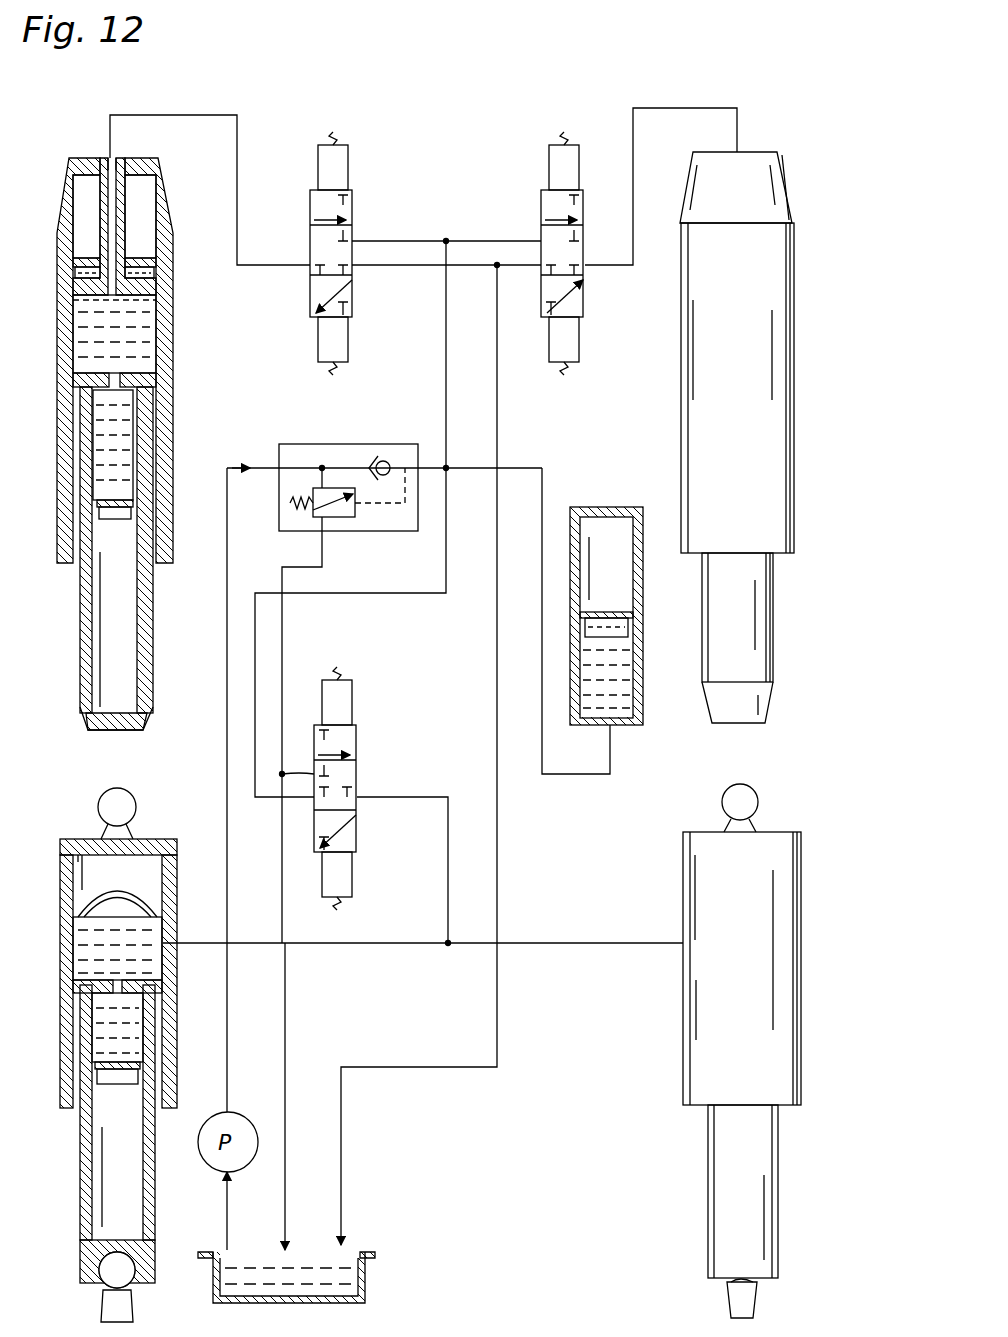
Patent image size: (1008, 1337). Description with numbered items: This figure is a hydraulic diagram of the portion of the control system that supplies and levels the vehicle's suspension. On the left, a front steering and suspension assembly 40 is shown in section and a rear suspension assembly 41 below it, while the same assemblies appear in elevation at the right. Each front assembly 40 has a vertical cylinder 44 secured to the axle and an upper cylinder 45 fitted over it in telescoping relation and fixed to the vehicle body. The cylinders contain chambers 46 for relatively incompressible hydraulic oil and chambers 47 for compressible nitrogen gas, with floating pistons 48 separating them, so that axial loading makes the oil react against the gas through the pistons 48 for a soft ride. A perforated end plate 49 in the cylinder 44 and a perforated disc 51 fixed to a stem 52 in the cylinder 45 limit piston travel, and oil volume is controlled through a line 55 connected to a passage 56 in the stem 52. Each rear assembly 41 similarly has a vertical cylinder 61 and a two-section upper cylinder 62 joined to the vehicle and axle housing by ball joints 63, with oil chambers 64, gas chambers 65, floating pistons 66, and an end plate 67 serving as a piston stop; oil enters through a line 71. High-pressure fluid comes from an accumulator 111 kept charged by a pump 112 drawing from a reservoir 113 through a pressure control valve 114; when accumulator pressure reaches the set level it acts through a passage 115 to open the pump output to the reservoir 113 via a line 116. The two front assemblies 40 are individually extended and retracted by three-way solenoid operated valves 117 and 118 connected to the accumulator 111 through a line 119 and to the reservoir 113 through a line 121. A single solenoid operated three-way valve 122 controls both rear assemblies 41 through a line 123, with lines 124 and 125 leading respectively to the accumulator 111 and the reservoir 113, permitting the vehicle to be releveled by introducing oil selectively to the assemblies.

The front steering and suspension assembly 40 is at (421, 414).
The rear suspension assembly 41 is at (423, 1035).
The vertical cylinder 44 is at (80, 666).
The upper cylinder 45 is at (60, 430).
The chamber for incompressible fluid 46 is at (80, 325).
The chamber for compressible fluid 47 is at (145, 205).
The floating piston 48 is at (140, 255).
The perforated end plate 49 is at (95, 372).
The perforated disc 51 is at (73, 298).
The stem 52 is at (130, 175).
The line 55 is at (212, 115).
The passage 56 is at (112, 215).
The vertical cylinder 61 is at (80, 1162).
The upper cylinder 62 is at (175, 865).
The ball joint 63 is at (130, 800).
The chamber for incompressible fluid 64 is at (80, 955).
The chamber for compressible fluid 65 is at (80, 874).
The floating piston 66 is at (82, 906).
The end plate 67 is at (148, 990).
The line 71 is at (244, 950).
The accumulator 111 is at (610, 507).
The pump 112 is at (285, 1072).
The reservoir 113 is at (372, 1252).
The pressure control valve 114 is at (384, 482).
The passage 115 is at (385, 503).
The line 116 is at (322, 560).
The three-way solenoid operated valve 117 is at (355, 210).
The three-way solenoid operated valve 118 is at (541, 212).
The line 119 is at (446, 375).
The line 121 is at (497, 420).
The solenoid operated three-way valve 122 is at (360, 740).
The line 123 is at (448, 862).
The line 124 is at (255, 700).
The line 125 is at (282, 774).